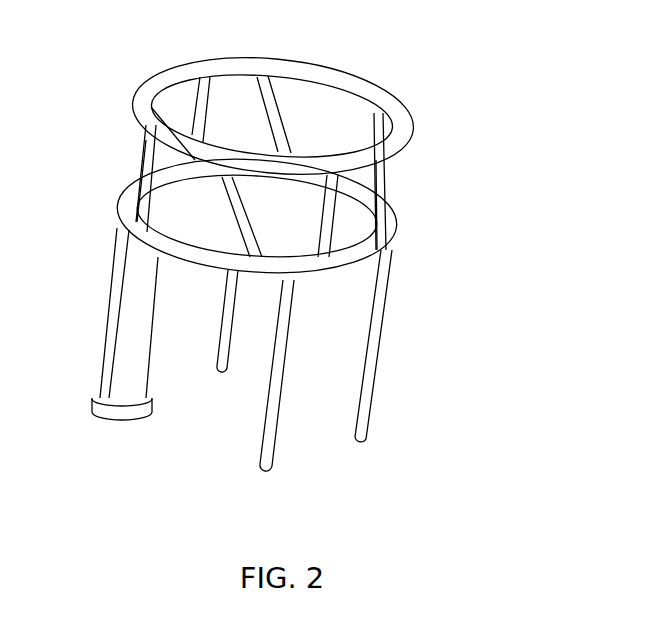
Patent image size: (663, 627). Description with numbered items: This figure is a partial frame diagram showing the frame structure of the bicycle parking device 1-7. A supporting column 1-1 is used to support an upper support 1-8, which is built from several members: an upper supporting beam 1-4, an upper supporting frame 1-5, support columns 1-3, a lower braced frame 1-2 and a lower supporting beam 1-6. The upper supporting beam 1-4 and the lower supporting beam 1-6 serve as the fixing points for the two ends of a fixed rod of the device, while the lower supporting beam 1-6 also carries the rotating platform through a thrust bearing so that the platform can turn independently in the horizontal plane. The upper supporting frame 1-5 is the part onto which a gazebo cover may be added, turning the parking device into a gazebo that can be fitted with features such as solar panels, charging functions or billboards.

The supporting column 1-1 is at (380, 182).
The lower braced frame 1-2 is at (397, 219).
The support columns 1-3 is at (277, 115).
The upper supporting beam 1-4 is at (200, 183).
The upper supporting frame 1-5 is at (167, 80).
The lower supporting beam 1-6 is at (372, 407).
The bicycle parking device 1-7 is at (101, 228).
The upper support 1-8 is at (550, 88).